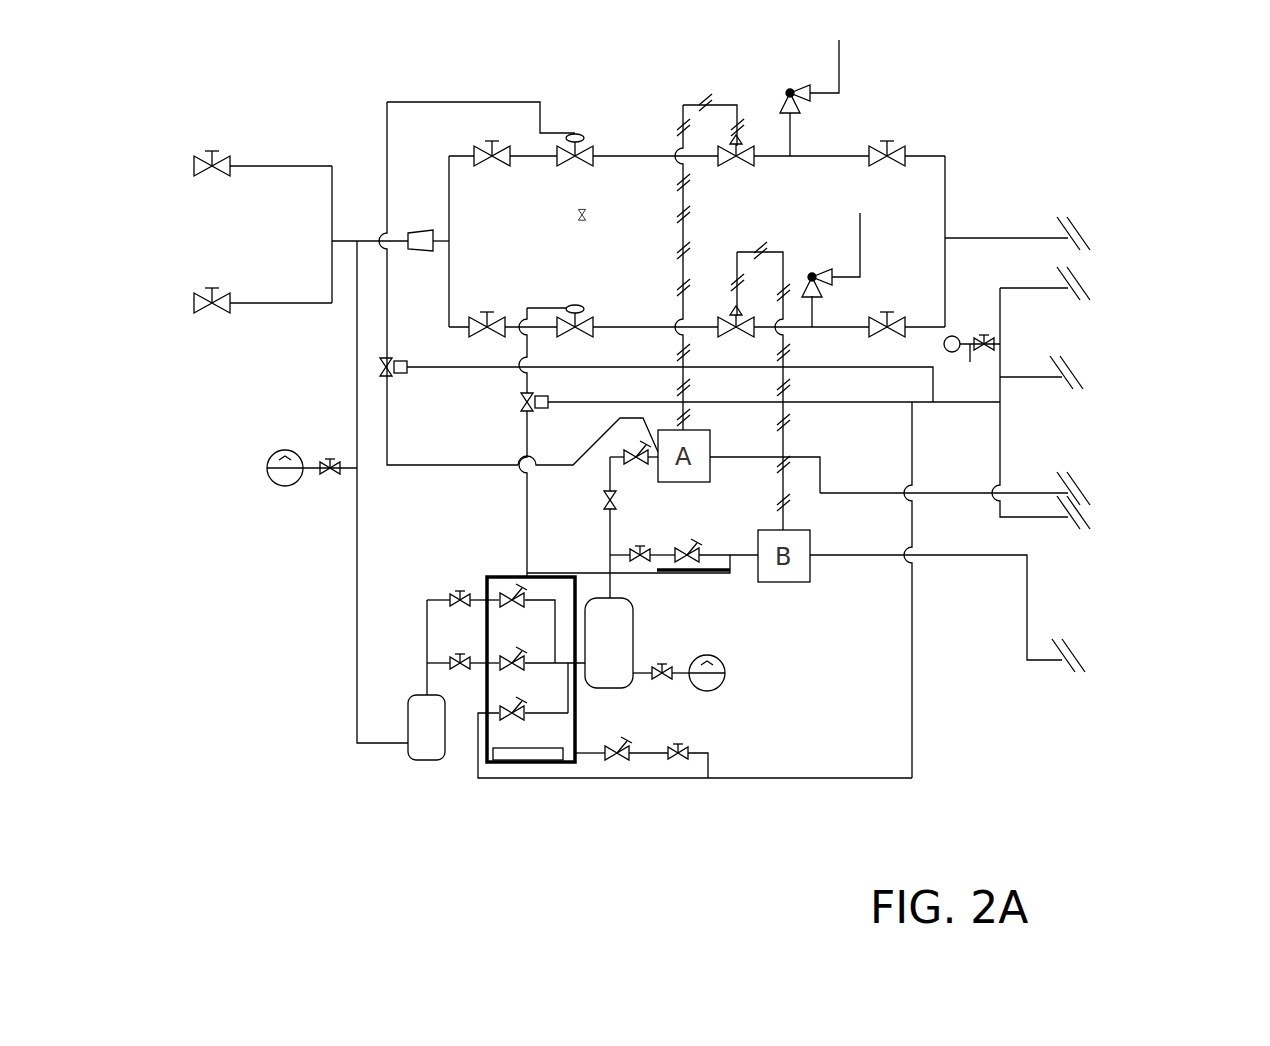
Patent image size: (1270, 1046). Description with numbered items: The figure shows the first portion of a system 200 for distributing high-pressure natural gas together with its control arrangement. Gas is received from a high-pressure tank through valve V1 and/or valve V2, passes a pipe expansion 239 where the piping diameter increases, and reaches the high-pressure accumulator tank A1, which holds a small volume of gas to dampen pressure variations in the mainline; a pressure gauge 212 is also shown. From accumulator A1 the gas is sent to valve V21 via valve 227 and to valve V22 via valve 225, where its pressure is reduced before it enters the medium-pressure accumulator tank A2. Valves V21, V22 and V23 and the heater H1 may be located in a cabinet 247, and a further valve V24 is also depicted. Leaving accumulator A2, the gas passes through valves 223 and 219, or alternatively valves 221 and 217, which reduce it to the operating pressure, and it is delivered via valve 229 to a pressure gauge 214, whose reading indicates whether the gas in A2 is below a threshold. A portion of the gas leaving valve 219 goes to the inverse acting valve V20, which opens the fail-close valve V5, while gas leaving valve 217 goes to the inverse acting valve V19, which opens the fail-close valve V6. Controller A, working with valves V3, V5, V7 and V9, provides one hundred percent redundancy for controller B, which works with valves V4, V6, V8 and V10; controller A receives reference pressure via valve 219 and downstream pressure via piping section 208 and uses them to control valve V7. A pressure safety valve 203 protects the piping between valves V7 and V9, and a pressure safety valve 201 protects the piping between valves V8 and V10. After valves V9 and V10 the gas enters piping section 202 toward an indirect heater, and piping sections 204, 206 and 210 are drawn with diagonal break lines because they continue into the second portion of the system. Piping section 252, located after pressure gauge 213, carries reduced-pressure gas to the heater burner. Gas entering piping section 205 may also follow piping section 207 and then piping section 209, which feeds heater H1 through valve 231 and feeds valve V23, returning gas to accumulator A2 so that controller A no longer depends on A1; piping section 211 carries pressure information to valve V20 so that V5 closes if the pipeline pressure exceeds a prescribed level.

The system 200 is at (270, 773).
The pressure safety valve 201 is at (845, 245).
The piping section 202 is at (1085, 205).
The pressure safety valve 203 is at (862, 62).
The piping section 204 is at (1100, 288).
The piping section 205 is at (1005, 325).
The piping section 206 is at (1092, 530).
The piping section 207 is at (945, 420).
The piping section 208 is at (1095, 465).
The piping section 209 is at (920, 720).
The piping section 210 is at (1095, 648).
The piping section 211 is at (808, 360).
The pressure gauge 212 is at (270, 490).
The pressure gauge 213 is at (973, 322).
The pressure gauge 214 is at (730, 660).
The valve 217 is at (716, 535).
The valve 219 is at (640, 467).
The valve 221 is at (642, 541).
The valve 223 is at (584, 527).
The valve 225 is at (463, 648).
The valve 227 is at (463, 581).
The valve 229 is at (666, 656).
The valve 231 is at (687, 746).
The pipe expansion 239 is at (410, 215).
The cabinet 247 is at (511, 575).
The piping section 252 is at (1038, 388).
The valve V1 is at (262, 181).
The valve V2 is at (262, 317).
The valve V3 is at (499, 172).
The valve V4 is at (486, 303).
The valve V5 is at (575, 173).
The valve V6 is at (565, 300).
The valve V7 is at (733, 168).
The valve V8 is at (736, 336).
The valve V9 is at (889, 171).
The valve V10 is at (896, 304).
The valve V19 is at (760, 418).
The valve V20 is at (656, 388).
The valve V21 is at (500, 590).
The valve V22 is at (497, 648).
The valve V23 is at (508, 730).
The valve V24 is at (617, 767).
The high-pressure accumulator tank A1 is at (424, 749).
The medium-pressure accumulator tank A2 is at (609, 662).
The heater H1 is at (535, 754).